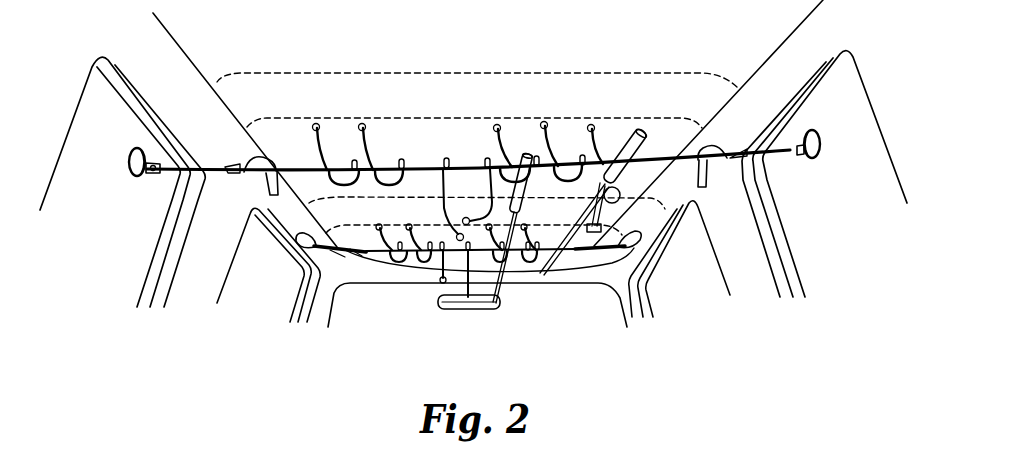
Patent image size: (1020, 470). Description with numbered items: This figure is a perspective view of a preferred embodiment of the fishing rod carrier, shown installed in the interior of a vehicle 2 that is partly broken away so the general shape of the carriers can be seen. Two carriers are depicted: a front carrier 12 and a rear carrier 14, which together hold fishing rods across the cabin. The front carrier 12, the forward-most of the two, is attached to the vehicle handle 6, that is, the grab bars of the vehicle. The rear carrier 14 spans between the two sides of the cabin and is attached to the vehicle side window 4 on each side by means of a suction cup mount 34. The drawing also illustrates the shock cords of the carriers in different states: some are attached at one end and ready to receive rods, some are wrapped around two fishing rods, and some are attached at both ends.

The vehicle 2 is at (182, 102).
The vehicle side window 4 is at (80, 133).
The vehicle handle 6 is at (304, 244).
The front carrier 12 is at (437, 274).
The rear carrier 14 is at (438, 168).
The suction cup mount 34 is at (127, 167).